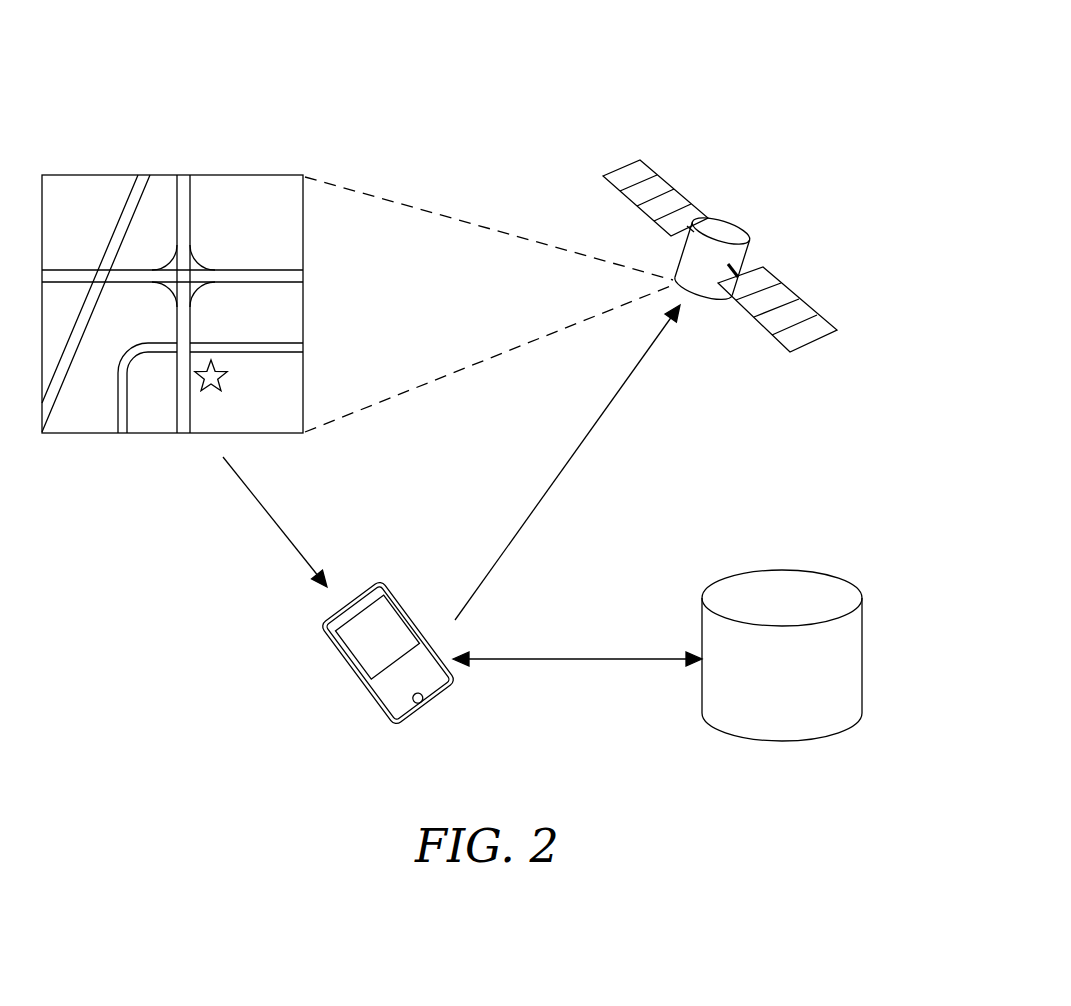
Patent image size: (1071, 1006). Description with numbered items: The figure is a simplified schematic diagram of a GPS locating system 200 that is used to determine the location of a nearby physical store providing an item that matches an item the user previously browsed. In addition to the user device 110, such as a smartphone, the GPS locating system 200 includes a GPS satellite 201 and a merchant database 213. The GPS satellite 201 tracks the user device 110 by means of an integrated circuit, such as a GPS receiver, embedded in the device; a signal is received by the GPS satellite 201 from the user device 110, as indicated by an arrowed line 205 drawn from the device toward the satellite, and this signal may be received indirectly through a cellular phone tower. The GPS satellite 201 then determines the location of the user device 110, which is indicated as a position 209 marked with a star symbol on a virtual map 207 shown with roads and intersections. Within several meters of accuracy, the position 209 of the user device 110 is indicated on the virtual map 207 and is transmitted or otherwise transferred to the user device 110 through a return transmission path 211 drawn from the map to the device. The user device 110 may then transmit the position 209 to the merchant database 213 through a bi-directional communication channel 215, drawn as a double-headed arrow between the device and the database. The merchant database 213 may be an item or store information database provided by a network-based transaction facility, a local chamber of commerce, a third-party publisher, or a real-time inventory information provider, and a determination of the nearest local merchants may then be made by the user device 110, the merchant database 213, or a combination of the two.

The GPS locating system 200 is at (638, 70).
The GPS satellite 201 is at (726, 222).
The arrowed line 205 is at (598, 423).
The virtual map 207 is at (157, 174).
The position 209 is at (213, 391).
The return transmission path 211 is at (272, 517).
The user device 110 is at (340, 658).
The merchant database 213 is at (781, 568).
The bi-directional communication channel 215 is at (583, 657).